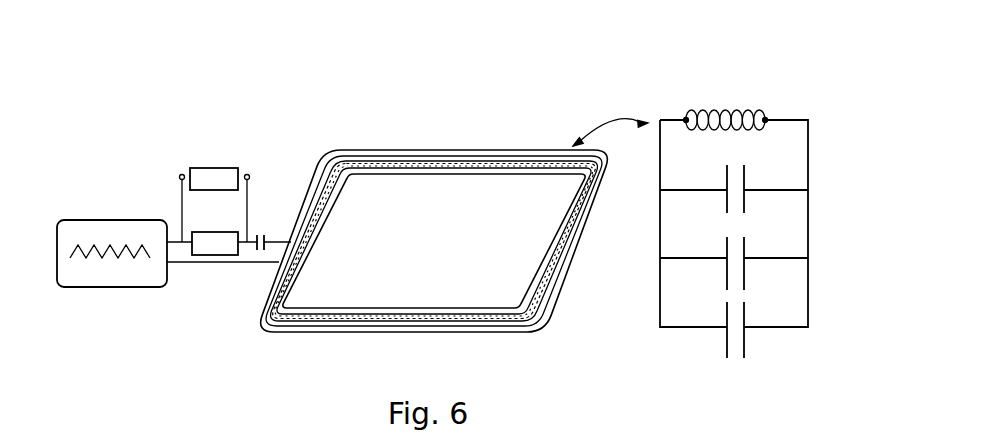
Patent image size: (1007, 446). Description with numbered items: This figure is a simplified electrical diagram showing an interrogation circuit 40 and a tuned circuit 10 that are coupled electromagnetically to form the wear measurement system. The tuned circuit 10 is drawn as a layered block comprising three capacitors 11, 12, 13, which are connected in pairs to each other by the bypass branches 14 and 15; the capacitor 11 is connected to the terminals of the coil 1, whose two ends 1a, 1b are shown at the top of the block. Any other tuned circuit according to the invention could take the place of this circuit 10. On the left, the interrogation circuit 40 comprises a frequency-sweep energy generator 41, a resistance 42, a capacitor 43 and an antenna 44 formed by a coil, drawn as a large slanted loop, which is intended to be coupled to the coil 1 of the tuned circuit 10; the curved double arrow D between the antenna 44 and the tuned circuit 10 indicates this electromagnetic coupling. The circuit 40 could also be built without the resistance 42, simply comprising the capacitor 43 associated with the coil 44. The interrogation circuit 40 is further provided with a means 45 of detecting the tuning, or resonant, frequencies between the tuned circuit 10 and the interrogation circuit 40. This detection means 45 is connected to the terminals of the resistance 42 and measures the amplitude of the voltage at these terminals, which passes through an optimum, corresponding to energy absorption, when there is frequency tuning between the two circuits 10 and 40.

The coil 1 is at (724, 85).
The first coil terminal 1a is at (686, 118).
The second coil terminal 1b is at (766, 118).
The tuned circuit 10 is at (688, 345).
The capacitor 11 is at (745, 180).
The capacitor 12 is at (745, 243).
The capacitor 13 is at (745, 308).
The bypass branch 14 is at (660, 213).
The bypass branch 15 is at (660, 296).
The interrogation circuit 40 is at (232, 300).
The frequency-sweep energy generator 41 is at (98, 288).
The resistance 42 is at (203, 256).
The capacitor 43 is at (273, 230).
The antenna 44 is at (482, 140).
The means of detecting the tuning frequencies 45 is at (211, 168).
The direction / distance indicator D is at (609, 126).